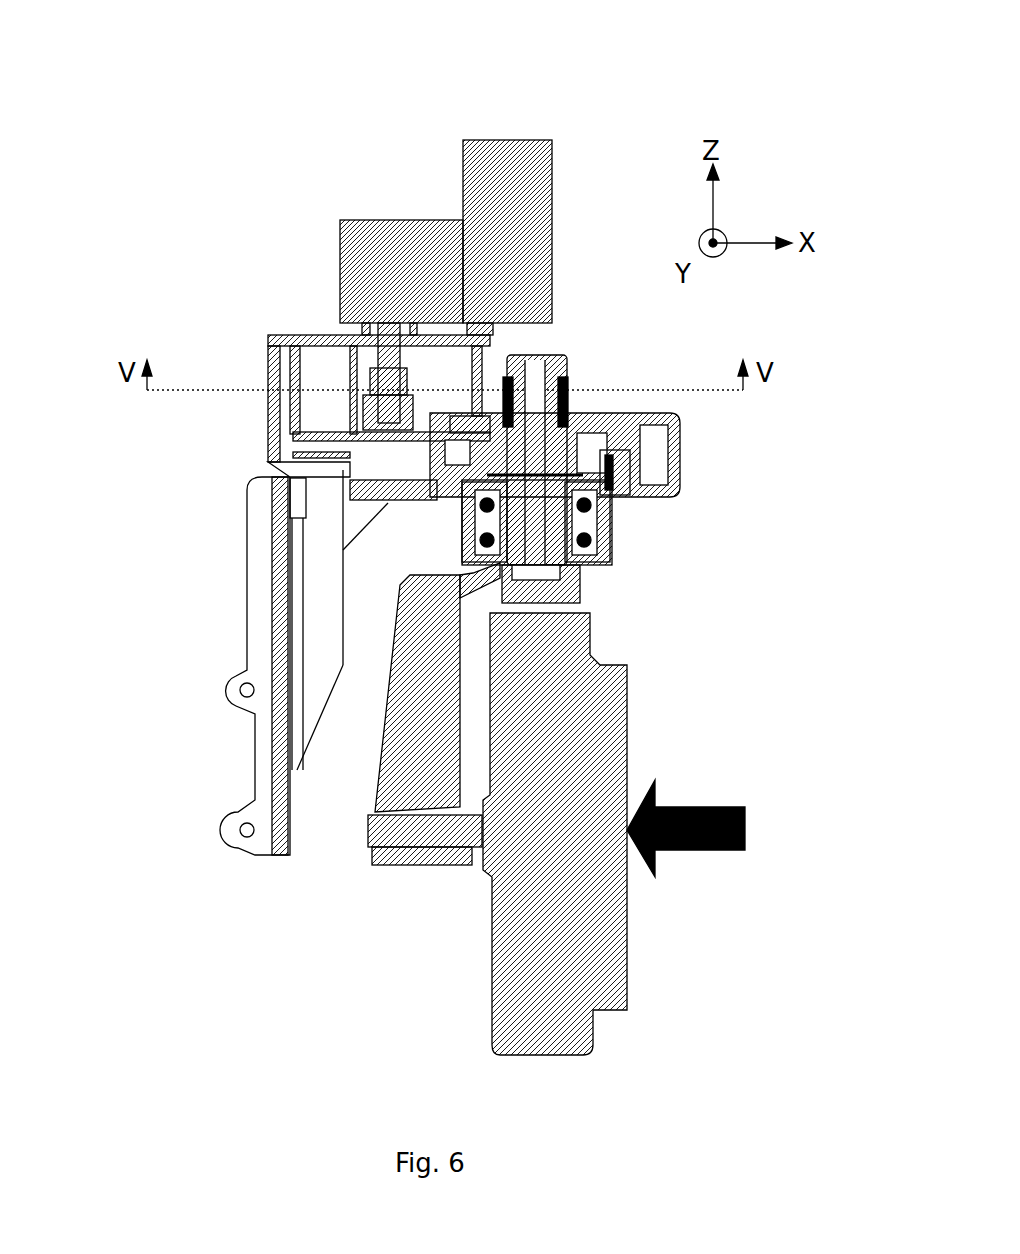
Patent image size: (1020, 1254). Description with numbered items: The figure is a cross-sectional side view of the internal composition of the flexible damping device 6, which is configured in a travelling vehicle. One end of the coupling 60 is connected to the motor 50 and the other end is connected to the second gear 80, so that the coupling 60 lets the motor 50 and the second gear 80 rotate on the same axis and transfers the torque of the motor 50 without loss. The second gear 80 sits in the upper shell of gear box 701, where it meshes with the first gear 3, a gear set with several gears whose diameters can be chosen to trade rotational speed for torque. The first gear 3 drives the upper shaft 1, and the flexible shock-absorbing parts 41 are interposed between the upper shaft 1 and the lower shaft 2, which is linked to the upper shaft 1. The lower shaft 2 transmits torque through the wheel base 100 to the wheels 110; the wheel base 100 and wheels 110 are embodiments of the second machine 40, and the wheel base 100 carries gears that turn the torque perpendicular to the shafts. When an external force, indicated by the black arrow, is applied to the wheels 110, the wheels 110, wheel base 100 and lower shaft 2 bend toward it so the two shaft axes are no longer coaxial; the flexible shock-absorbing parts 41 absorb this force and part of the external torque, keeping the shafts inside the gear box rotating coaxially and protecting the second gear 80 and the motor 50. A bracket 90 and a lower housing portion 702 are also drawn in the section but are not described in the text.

The flexible damping device 6 is at (633, 122).
The motor 50 is at (355, 237).
The upper shell of gear box 701 is at (270, 378).
The coupling 60 is at (365, 412).
The second gear 80 is at (340, 452).
The bracket 90 is at (262, 620).
The wheel base 100 is at (410, 777).
The wheels 110 is at (590, 703).
The upper shaft 1 is at (570, 378).
The first gear 3 is at (680, 437).
The flexible shock-absorbing parts 41 is at (630, 467).
The second machine 40 is at (612, 503).
The lower housing 702 is at (612, 519).
The lower shaft 2 is at (612, 533).